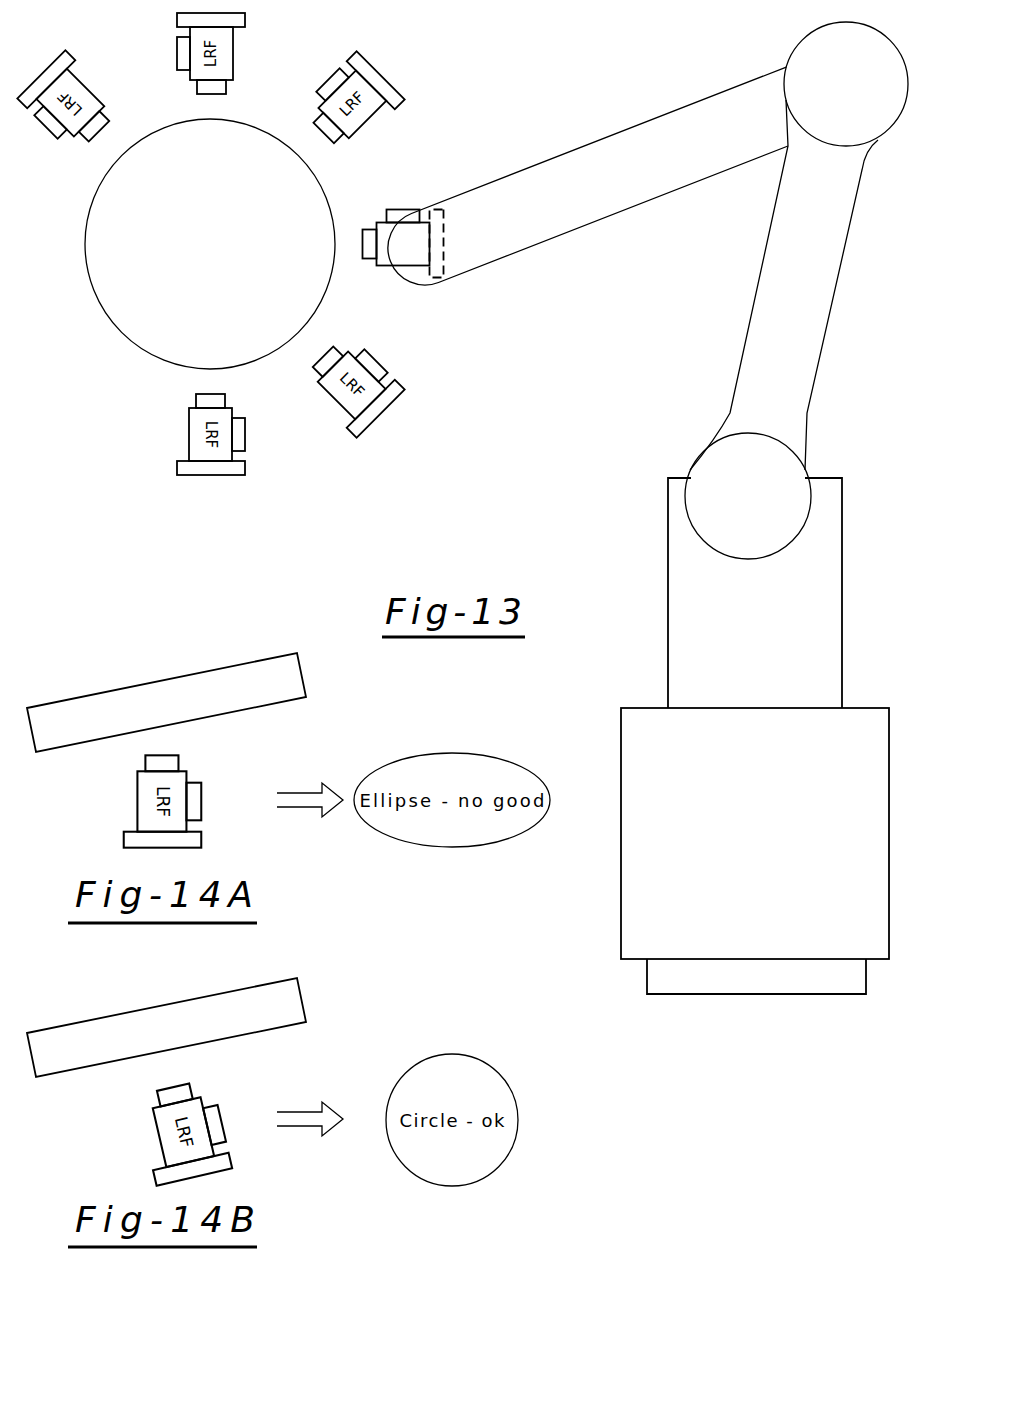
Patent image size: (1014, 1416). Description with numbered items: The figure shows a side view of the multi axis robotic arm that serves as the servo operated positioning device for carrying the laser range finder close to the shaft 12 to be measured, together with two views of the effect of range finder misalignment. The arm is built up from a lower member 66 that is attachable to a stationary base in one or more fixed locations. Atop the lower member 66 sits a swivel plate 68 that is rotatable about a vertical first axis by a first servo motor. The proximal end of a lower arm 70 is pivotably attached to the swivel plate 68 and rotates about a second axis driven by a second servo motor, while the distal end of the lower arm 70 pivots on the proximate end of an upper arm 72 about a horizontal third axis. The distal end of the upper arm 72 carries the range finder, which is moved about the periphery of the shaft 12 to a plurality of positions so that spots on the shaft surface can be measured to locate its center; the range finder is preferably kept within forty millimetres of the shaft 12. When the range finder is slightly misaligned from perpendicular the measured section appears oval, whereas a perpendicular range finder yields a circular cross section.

In FIG. 13, the shaft 12 is at (117, 271).
In FIG. 14A, the shaft 12 is at (287, 702).
In FIG. 14B, the shaft 12 is at (287, 1027).
In FIG. 13, the upper arm 72 is at (587, 170).
In FIG. 13, the lower arm 70 is at (815, 302).
In FIG. 13, the swivel plate 68 is at (814, 607).
In FIG. 13, the lower member 66 is at (866, 864).